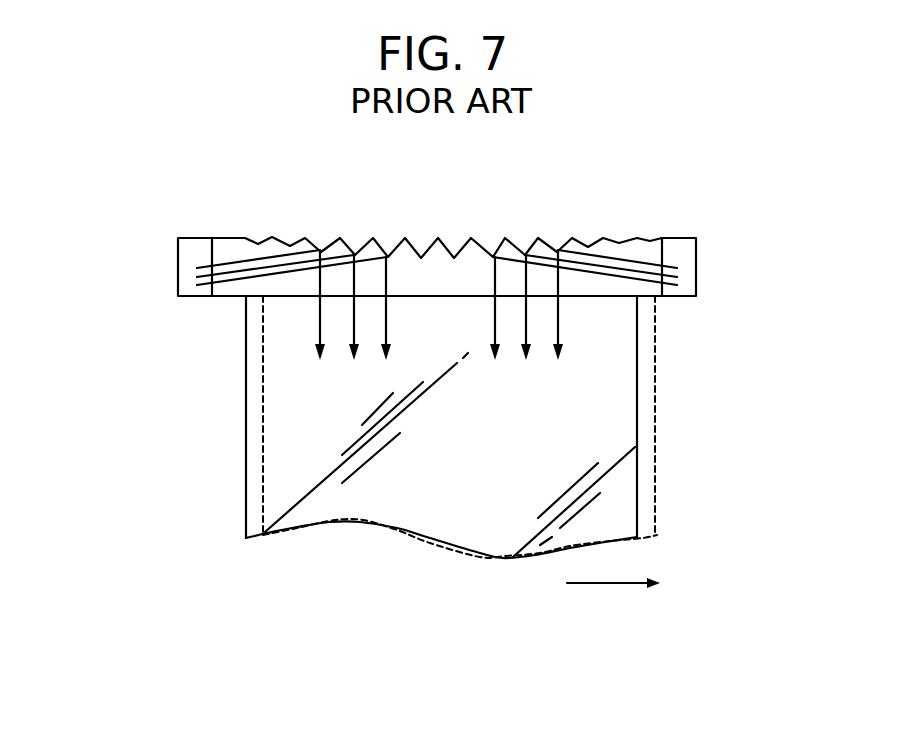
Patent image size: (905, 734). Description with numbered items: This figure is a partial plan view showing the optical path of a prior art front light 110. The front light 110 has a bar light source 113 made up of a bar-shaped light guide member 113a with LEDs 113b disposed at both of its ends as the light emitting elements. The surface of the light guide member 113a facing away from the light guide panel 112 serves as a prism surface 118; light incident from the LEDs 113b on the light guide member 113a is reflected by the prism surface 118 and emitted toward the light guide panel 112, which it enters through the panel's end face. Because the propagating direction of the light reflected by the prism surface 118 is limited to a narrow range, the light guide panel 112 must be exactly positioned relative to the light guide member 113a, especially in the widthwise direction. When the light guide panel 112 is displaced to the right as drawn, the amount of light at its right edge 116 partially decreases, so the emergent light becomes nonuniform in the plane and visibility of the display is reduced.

The front light 110 is at (413, 548).
The light guide panel 112 is at (255, 460).
The bar light source 113 is at (433, 219).
The light guide member 113a is at (230, 250).
The LEDs 113b is at (193, 258).
The right edge 116 is at (652, 455).
The prism surface 118 is at (457, 247).